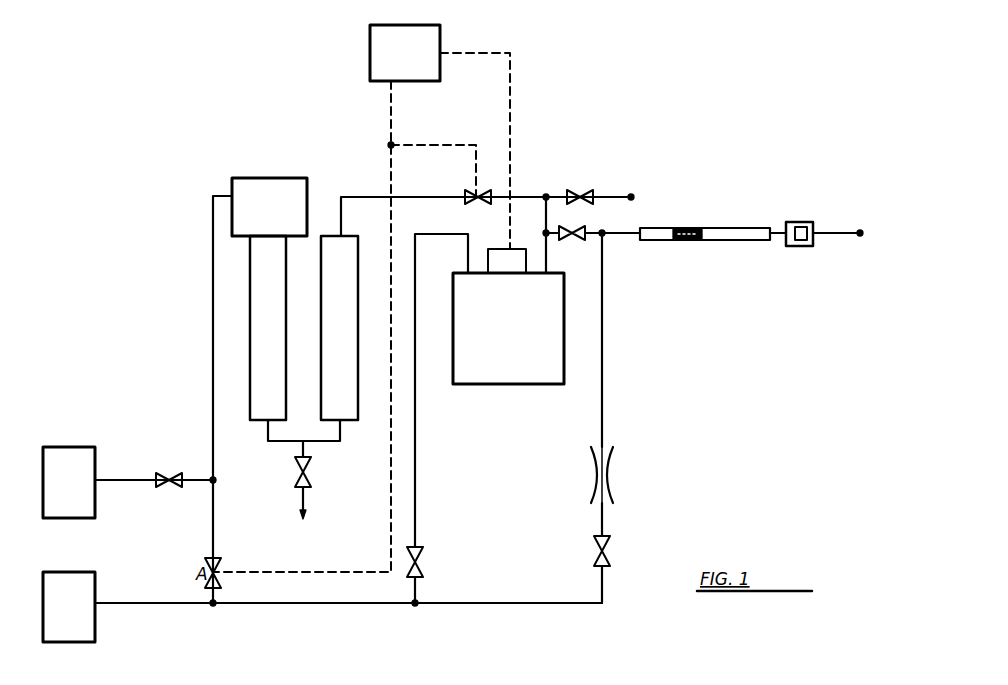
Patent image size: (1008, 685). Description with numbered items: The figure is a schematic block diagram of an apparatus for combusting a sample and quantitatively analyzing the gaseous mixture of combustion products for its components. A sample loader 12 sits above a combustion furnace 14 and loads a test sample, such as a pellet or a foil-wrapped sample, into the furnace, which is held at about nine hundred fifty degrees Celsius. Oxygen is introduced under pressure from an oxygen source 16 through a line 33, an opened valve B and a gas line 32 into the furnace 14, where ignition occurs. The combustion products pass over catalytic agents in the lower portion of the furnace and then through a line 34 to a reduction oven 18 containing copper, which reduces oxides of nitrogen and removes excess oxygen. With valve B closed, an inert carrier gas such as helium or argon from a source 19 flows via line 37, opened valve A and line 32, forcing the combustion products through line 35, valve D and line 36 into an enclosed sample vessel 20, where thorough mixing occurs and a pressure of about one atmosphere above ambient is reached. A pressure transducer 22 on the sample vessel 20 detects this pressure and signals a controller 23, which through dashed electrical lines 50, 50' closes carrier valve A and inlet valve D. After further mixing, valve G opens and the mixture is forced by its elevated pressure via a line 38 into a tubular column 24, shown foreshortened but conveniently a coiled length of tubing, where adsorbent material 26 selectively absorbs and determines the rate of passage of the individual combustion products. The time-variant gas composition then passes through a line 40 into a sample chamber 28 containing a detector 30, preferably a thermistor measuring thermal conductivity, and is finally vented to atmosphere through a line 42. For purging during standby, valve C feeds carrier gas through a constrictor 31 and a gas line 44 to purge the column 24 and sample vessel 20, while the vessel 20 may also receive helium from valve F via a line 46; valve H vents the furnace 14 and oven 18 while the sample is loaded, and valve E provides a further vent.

The sample loader 12 is at (269, 207).
The combustion furnace 14 is at (268, 328).
The oxygen source 16 is at (69, 482).
The reduction oven 18 is at (339, 328).
The carrier gas source 19 is at (69, 607).
The sample vessel 20 is at (508, 328).
The pressure transducer 22 is at (508, 258).
The controller 23 is at (405, 53).
The tubular column 24 is at (738, 240).
The adsorbent material 26 is at (680, 240).
The sample chamber 28 is at (790, 221).
The detector 30 is at (797, 246).
The constrictor 31 is at (610, 470).
The gas line 32 is at (212, 362).
The line 33 is at (134, 480).
The line 34 is at (278, 447).
The line 35 is at (434, 192).
The line 36 is at (552, 229).
The line 37 is at (150, 603).
The line 38 is at (592, 232).
The line 40 is at (781, 222).
The line 42 is at (840, 232).
The gas line 44 is at (602, 395).
The line 46 is at (415, 442).
The electrical line 50 is at (502, 151).
The electrical line 50' is at (344, 326).